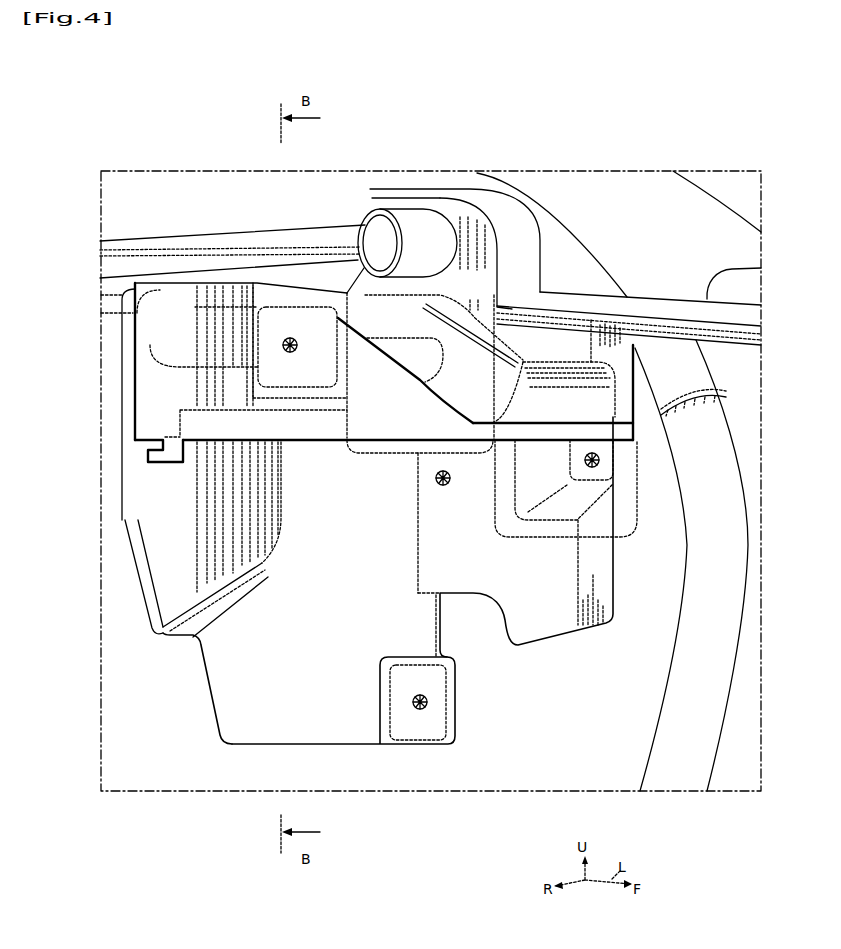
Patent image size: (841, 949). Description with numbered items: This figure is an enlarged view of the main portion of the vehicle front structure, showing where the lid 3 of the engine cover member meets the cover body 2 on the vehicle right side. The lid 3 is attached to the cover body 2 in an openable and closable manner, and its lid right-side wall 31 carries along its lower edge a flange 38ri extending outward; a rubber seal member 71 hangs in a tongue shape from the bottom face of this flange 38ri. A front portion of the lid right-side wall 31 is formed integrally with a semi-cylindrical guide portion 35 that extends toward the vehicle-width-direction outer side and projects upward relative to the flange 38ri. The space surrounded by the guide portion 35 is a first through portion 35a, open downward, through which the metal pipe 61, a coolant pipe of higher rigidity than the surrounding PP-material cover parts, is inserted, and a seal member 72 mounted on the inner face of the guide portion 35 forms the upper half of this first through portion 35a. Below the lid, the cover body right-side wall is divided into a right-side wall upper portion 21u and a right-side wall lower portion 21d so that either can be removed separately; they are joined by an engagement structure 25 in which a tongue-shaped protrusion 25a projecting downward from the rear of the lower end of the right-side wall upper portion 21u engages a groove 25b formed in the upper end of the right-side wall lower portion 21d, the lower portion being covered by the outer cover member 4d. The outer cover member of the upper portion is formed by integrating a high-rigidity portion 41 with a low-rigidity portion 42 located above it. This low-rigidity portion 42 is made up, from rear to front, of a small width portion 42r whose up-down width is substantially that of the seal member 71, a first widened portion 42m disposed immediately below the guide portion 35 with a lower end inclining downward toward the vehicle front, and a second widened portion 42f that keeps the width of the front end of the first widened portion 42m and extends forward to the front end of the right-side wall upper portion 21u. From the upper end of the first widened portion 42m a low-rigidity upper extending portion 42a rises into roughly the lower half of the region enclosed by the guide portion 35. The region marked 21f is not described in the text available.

The lid right-side wall 31 is at (152, 190).
The cover body 2 is at (516, 766).
The lid 3 is at (758, 342).
The flange 38ri is at (226, 245).
The seal member 71 is at (133, 305).
The seal member 72 is at (452, 198).
The metal pipe 61 is at (293, 228).
The guide portion 35 is at (438, 190).
The first through portion 35a is at (397, 186).
The low-rigidity upper extending portion 42a is at (492, 287).
The low-rigidity portion 42 is at (643, 418).
The right-side wall upper portion 21u is at (133, 403).
The small width portion 42r is at (172, 372).
The high-rigidity portion 41 is at (307, 447).
The engagement structure 25 is at (142, 457).
The protrusion 25a is at (152, 464).
The groove 25b is at (167, 464).
The first widened portion 42m is at (388, 456).
The second widened portion 42f is at (549, 537).
The front portion of bracket (11) 21f is at (463, 762).
The right-side wall lower portion 21d is at (206, 712).
The outer cover member 4d is at (277, 746).